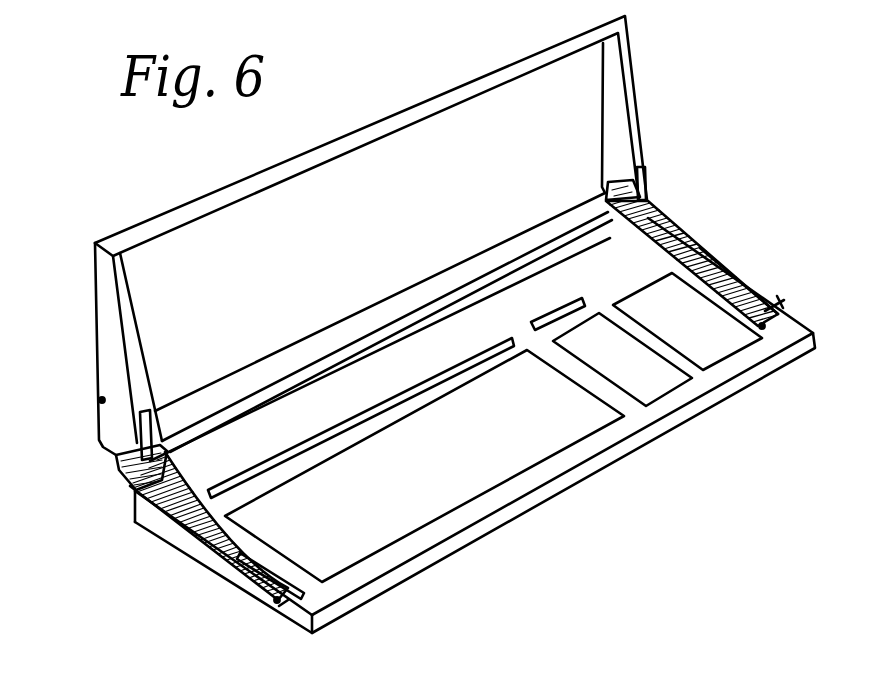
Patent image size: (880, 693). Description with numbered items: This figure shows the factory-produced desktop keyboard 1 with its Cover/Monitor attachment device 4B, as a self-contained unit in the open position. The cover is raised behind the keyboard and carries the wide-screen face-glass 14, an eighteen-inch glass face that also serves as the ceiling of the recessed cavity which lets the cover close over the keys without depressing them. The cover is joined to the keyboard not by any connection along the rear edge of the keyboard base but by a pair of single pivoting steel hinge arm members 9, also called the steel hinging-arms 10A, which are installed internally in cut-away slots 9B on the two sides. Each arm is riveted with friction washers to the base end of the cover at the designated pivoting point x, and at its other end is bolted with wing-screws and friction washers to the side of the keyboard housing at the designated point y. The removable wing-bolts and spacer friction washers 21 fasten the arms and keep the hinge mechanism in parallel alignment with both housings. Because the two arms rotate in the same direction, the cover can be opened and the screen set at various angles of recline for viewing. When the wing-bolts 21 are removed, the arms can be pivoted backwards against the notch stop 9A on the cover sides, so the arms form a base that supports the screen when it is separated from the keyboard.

The keyboard 1 is at (436, 484).
The Cover/Monitor attachment device 4B is at (215, 191).
The wide-screen face-glass 14 is at (374, 247).
The steel hinge arm members 9 is at (724, 271).
The notch stop 9A is at (101, 400).
The cut-away slots for steel hinge arms 9B is at (645, 172).
The steel hinging-arms 10A is at (693, 219).
The wing-bolts and spacer friction washers 21 is at (763, 329).
The riveted pivoting point on cover x is at (115, 454).
The wing-screw point on keyboard base y is at (284, 610).